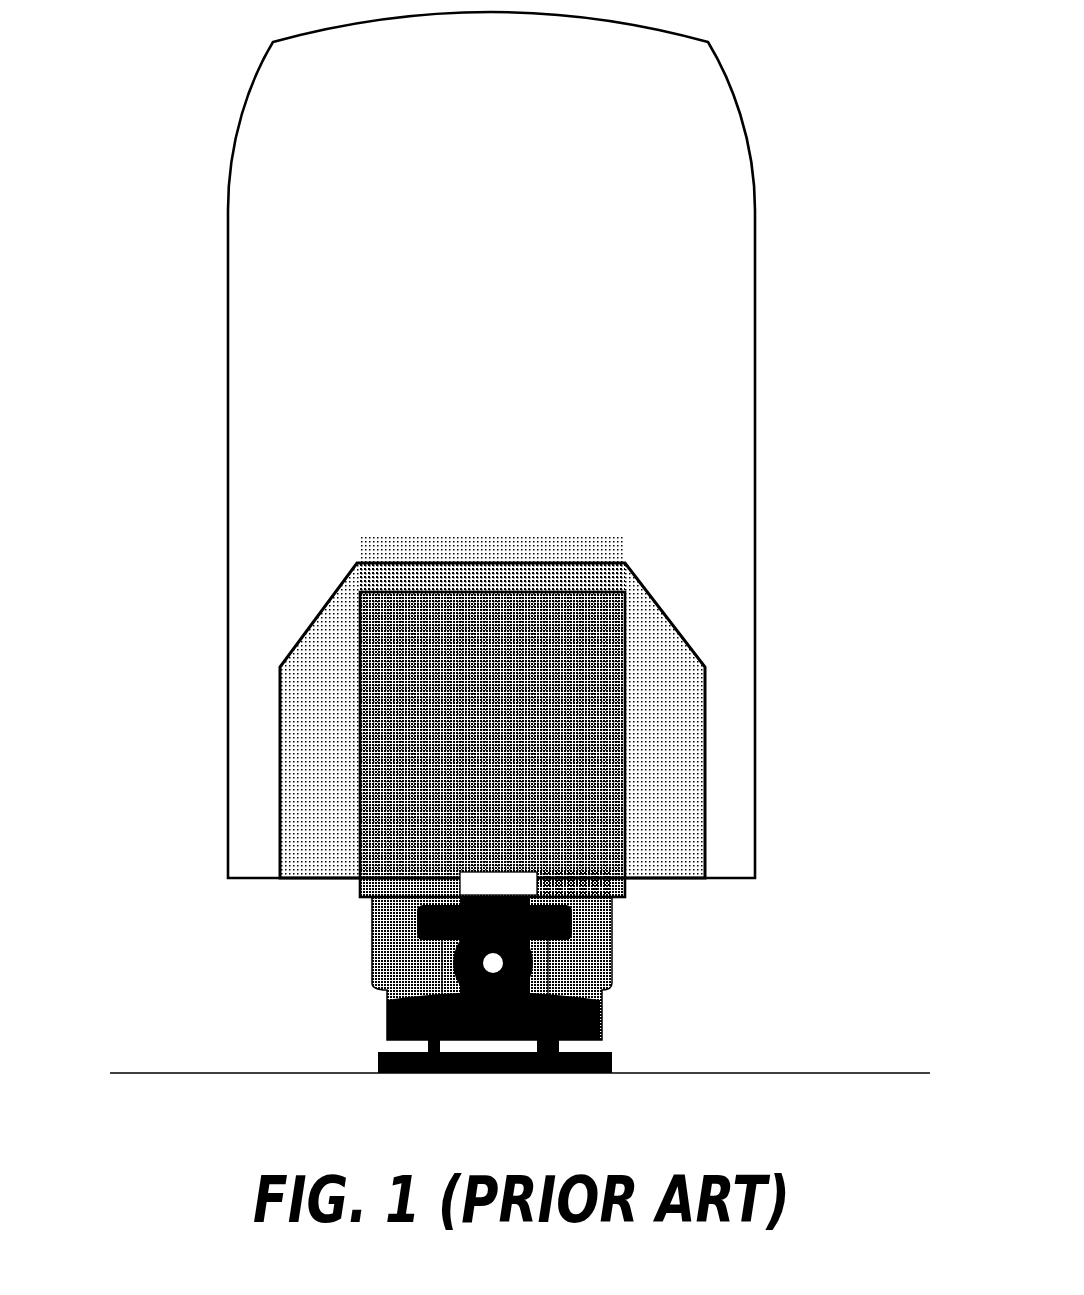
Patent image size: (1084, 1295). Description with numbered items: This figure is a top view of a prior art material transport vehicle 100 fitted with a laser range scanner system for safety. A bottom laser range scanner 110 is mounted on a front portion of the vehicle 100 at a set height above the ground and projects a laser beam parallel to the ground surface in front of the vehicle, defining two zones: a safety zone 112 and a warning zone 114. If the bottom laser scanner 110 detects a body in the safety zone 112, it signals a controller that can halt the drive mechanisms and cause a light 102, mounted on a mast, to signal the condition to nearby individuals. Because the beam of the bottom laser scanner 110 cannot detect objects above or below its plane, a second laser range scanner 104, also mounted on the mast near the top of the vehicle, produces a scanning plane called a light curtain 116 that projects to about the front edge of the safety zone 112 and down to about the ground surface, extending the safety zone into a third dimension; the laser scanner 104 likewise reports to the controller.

The material transport vehicle 100 is at (337, 960).
The light 102 is at (565, 948).
The laser range scanner 104 is at (540, 885).
The bottom laser range scanner 110 is at (465, 832).
The safety zone 112 is at (680, 735).
The warning zone 114 is at (668, 258).
The light curtain 116 is at (507, 690).